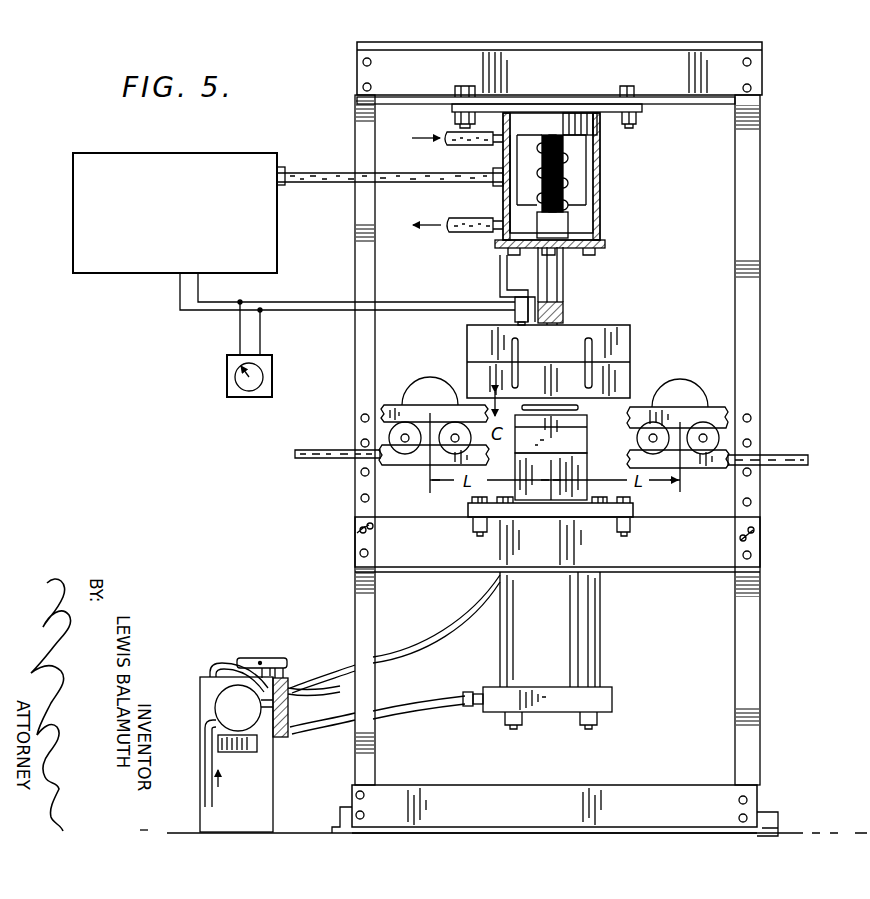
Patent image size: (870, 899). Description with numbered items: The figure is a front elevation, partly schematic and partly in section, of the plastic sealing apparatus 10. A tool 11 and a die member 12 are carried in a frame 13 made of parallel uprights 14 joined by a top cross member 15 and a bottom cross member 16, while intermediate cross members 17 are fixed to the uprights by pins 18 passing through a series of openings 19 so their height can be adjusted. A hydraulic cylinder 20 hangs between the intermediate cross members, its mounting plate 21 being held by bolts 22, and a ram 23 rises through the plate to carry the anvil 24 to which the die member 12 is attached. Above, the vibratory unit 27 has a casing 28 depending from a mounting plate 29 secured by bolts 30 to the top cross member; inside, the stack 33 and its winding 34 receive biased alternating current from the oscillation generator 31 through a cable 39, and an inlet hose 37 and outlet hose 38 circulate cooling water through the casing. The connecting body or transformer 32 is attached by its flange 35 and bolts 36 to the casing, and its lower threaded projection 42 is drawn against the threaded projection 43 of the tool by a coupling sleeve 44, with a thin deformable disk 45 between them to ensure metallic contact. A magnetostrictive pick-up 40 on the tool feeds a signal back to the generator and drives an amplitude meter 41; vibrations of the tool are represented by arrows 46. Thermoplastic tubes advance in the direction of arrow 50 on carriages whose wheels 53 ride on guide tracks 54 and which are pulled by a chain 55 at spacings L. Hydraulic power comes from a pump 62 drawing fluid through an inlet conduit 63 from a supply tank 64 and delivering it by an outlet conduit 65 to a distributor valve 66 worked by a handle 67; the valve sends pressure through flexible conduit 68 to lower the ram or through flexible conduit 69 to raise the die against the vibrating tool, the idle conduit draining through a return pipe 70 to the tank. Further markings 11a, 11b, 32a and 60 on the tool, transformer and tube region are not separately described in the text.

The apparatus 10 is at (343, 363).
The tool 11 is at (564, 360).
The upper clamping block portion 11a is at (472, 345).
The lower clamping block portion 11b is at (620, 368).
The die member 12 is at (584, 418).
The frame 13 is at (764, 688).
The uprights 14 is at (355, 245).
The top cross member 15 is at (762, 43).
The bottom cross member 16 is at (725, 797).
The intermediate cross members 17 is at (753, 543).
The pins 18 is at (356, 533).
The openings 19 is at (752, 418).
The hydraulic cylinder 20 is at (600, 613).
The mounting plate 21 is at (633, 508).
The bolts 22 is at (633, 498).
The ram 23 is at (584, 473).
The anvil 24 is at (586, 447).
The vibratory unit 27 is at (586, 189).
The casing 28 is at (599, 132).
The mounting plate 29 is at (642, 112).
The bolts 30 is at (633, 86).
The generator 31 is at (162, 167).
The connecting body 32 is at (565, 280).
The connecting body 32a is at (568, 207).
The stack 33 is at (566, 156).
The winding 34 is at (566, 178).
The flange 35 is at (602, 248).
The bolts 36 is at (578, 254).
The inlet hose 37 is at (446, 132).
The outlet hose 38 is at (465, 232).
The cable 39 is at (326, 170).
The magnetostrictive pick-up 40 is at (500, 316).
The amplitude meter 41 is at (227, 378).
The threaded projection 42 is at (522, 301).
The threaded projection 43 is at (554, 348).
The coupling sleeve 44 is at (564, 307).
The thin disk 45 is at (555, 316).
The arrows 46 is at (457, 410).
The arrow 50 is at (785, 445).
The wheels 53 is at (720, 438).
The guide tracks 54 is at (714, 410).
The chain 55 is at (784, 465).
The gap 60 is at (518, 410).
The pump 62 is at (214, 711).
The inlet conduit 63 is at (205, 784).
The supply tank 64 is at (258, 810).
The outlet conduit 65 is at (288, 706).
The distributor valve 66 is at (296, 680).
The handle 67 is at (252, 658).
The flexible conduit 68 is at (465, 608).
The flexible conduit 69 is at (432, 706).
The return pipe 70 is at (210, 668).